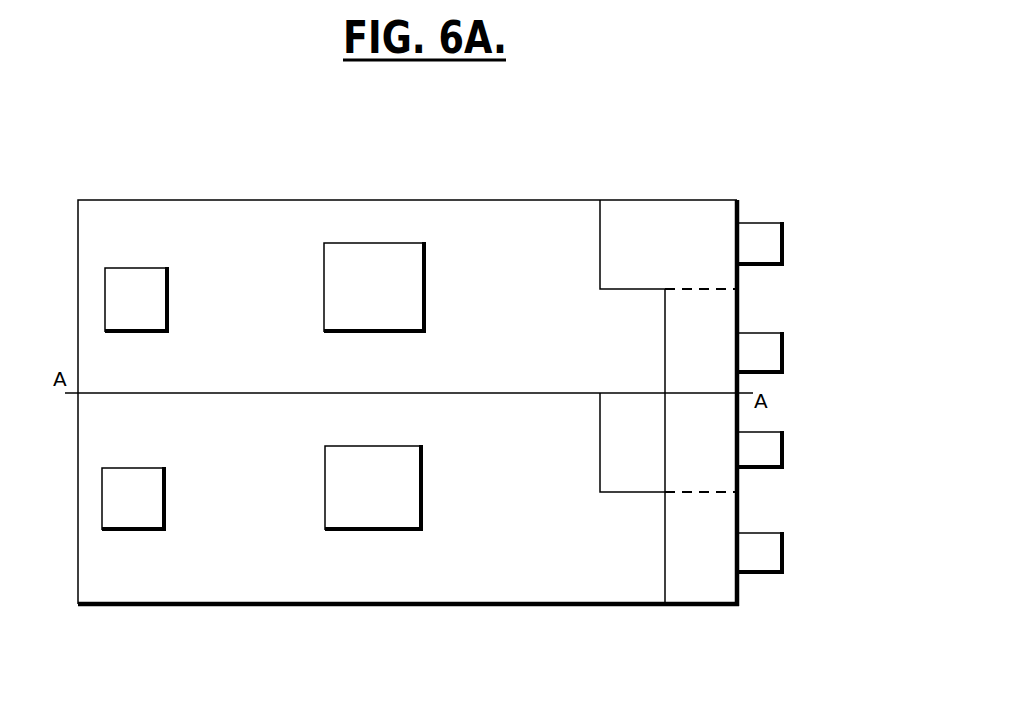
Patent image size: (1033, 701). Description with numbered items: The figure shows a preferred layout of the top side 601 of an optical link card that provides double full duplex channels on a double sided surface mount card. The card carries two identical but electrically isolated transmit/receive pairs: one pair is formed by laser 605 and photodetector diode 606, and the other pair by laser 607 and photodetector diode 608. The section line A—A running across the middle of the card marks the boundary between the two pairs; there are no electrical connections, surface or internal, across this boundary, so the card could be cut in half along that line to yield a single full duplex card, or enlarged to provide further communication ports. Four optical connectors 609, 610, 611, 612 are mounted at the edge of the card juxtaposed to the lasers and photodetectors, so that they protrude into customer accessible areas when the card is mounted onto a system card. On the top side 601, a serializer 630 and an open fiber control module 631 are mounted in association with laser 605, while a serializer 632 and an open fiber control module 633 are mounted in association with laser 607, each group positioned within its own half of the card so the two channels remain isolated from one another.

The top of the card 601 is at (408, 432).
The laser 605 is at (693, 218).
The photodetector diode 606 is at (713, 384).
The laser 607 is at (718, 417).
The photodetector diode 608 is at (706, 592).
The optical connector 609 is at (753, 237).
The optical connector 610 is at (767, 360).
The optical connector 611 is at (768, 441).
The optical connector 612 is at (770, 560).
The serializer 630 is at (426, 282).
The open fiber control module 631 is at (169, 287).
The serializer 632 is at (423, 503).
The open fiber control module 633 is at (166, 503).